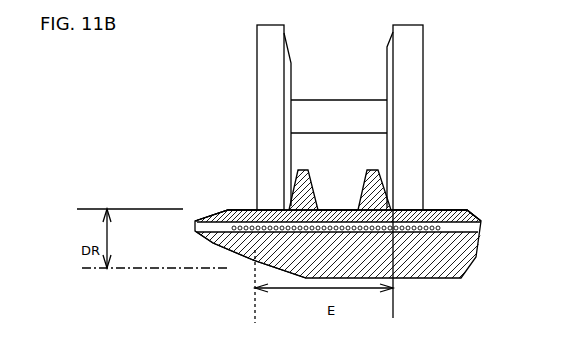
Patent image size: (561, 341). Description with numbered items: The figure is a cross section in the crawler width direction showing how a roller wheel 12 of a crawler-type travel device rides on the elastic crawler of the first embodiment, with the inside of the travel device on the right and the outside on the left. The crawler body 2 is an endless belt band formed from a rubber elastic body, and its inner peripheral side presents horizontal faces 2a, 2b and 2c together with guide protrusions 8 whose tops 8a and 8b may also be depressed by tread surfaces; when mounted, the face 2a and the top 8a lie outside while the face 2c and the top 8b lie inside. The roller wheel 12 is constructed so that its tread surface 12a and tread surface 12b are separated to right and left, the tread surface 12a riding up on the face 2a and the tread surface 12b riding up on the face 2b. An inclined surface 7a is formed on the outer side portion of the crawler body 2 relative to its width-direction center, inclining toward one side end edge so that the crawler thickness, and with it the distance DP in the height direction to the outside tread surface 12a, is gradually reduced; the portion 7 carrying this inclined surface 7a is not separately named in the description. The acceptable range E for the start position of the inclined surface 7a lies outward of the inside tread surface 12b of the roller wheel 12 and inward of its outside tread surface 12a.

The crawler body 2 is at (206, 221).
The face 2a is at (250, 209).
The face 2b is at (338, 208).
The face 2c is at (437, 209).
The base body 7 is at (417, 281).
The inclined surface 7a is at (253, 261).
The guide protrusions 8 is at (312, 168).
The top of guide protrusion 8a is at (316, 172).
The top of guide protrusion 8b is at (385, 190).
The roller wheel 12 is at (423, 25).
The tread surface 12a is at (263, 107).
The tread surface 12b is at (413, 93).